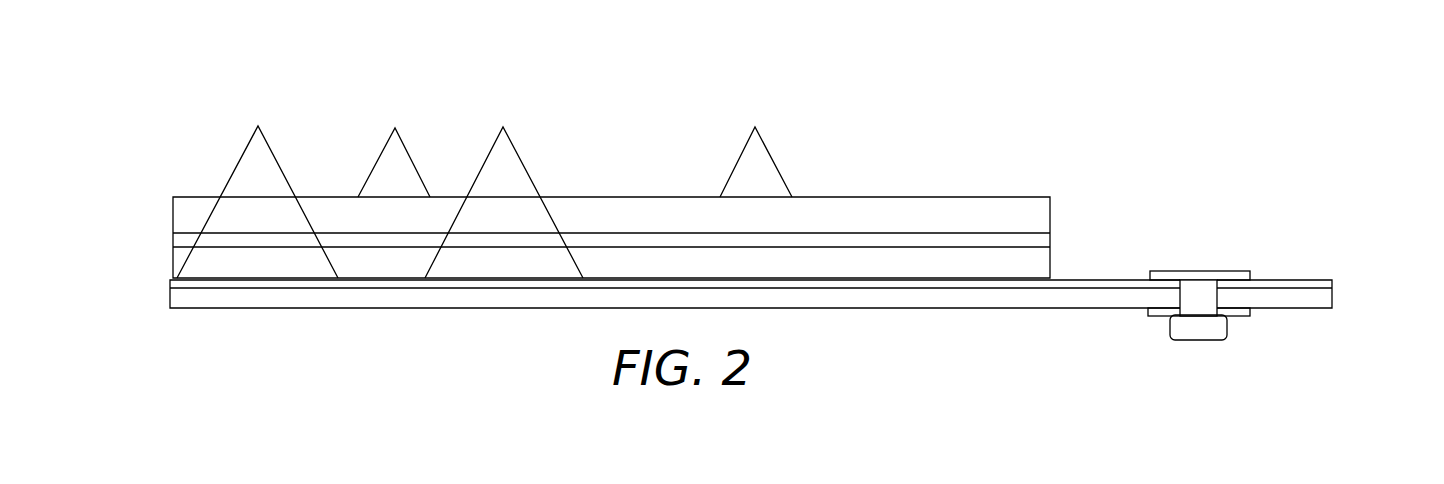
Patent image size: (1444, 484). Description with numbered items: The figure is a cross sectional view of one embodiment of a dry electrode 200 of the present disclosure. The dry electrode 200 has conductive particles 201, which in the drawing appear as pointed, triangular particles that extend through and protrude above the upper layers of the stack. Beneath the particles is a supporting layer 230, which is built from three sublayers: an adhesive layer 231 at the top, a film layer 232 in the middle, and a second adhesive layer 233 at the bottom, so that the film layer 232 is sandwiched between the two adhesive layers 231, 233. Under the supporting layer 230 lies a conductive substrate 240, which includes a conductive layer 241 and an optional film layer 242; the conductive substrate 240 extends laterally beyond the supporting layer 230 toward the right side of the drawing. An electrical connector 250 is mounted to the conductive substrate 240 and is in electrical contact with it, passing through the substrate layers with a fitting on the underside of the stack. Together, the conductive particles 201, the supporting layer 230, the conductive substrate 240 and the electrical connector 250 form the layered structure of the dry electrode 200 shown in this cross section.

The dry electrode 200 is at (1052, 78).
The conductive particles 201 is at (755, 127).
The supporting layer 230 is at (603, 233).
The adhesive layer 231 is at (1050, 208).
The film layer 232 is at (1050, 239).
The adhesive layer 233 is at (1050, 266).
The conductive substrate 240 is at (730, 335).
The conductive layer 241 is at (1332, 283).
The film layer 242 is at (1332, 295).
The electrical connector 250 is at (1198, 340).